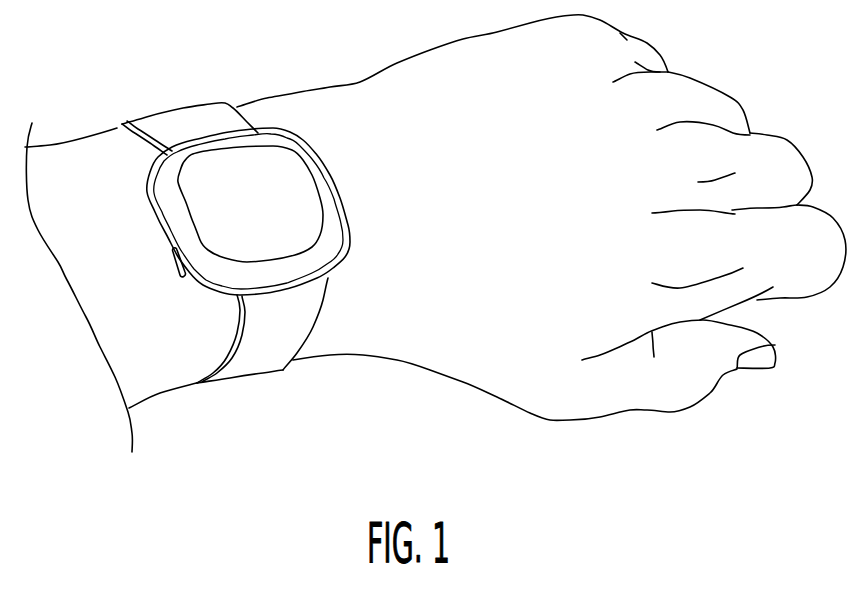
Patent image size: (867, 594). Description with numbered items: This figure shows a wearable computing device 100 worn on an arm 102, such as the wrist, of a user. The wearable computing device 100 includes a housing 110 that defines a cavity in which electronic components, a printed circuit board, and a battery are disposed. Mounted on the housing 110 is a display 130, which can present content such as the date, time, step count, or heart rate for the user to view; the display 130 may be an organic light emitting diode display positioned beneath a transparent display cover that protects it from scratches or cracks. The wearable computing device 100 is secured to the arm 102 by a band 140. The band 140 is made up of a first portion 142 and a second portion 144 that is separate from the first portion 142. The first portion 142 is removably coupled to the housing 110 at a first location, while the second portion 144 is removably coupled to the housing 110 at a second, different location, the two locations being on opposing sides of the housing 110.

The wearable computing device 100 is at (234, 248).
The arm 102 is at (345, 340).
The housing 110 is at (200, 300).
The display 130 is at (317, 182).
The band 140 is at (234, 211).
The first portion 142 is at (210, 106).
The second portion 144 is at (327, 292).